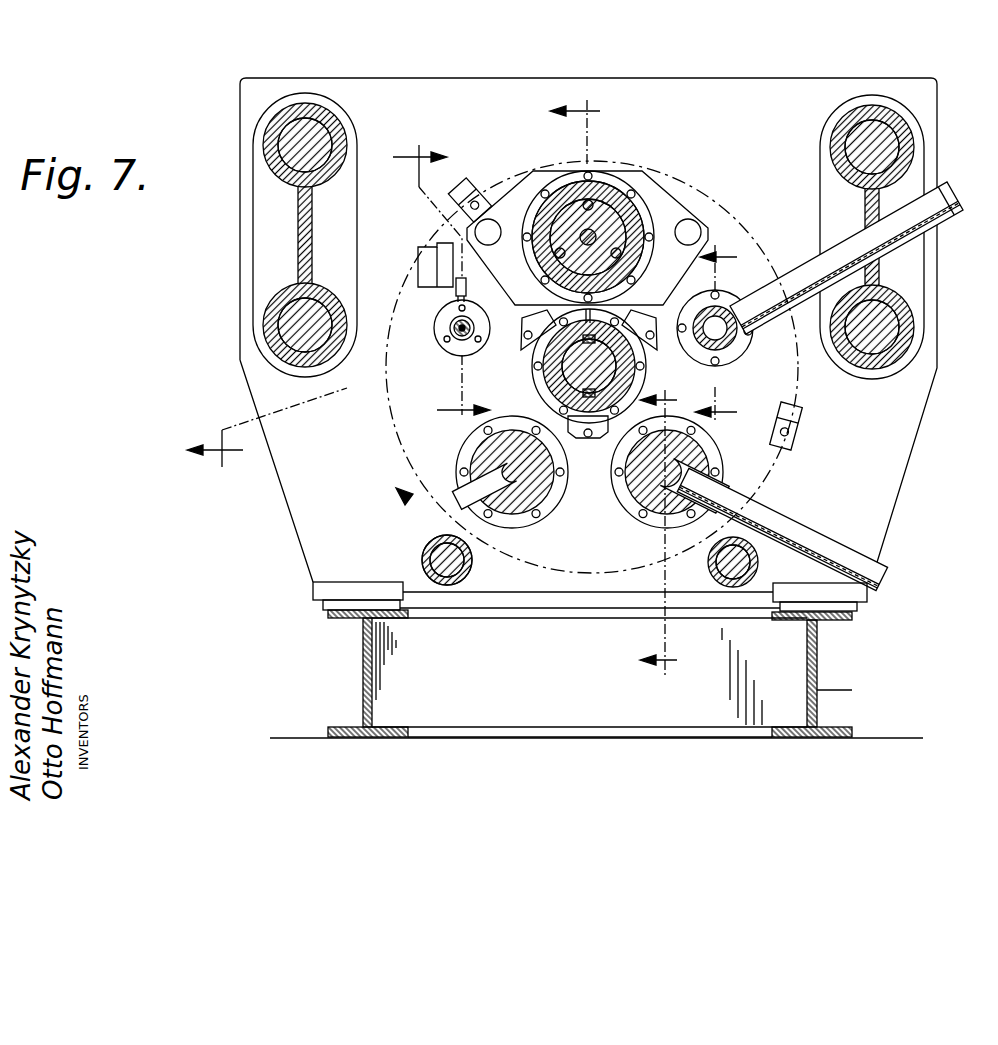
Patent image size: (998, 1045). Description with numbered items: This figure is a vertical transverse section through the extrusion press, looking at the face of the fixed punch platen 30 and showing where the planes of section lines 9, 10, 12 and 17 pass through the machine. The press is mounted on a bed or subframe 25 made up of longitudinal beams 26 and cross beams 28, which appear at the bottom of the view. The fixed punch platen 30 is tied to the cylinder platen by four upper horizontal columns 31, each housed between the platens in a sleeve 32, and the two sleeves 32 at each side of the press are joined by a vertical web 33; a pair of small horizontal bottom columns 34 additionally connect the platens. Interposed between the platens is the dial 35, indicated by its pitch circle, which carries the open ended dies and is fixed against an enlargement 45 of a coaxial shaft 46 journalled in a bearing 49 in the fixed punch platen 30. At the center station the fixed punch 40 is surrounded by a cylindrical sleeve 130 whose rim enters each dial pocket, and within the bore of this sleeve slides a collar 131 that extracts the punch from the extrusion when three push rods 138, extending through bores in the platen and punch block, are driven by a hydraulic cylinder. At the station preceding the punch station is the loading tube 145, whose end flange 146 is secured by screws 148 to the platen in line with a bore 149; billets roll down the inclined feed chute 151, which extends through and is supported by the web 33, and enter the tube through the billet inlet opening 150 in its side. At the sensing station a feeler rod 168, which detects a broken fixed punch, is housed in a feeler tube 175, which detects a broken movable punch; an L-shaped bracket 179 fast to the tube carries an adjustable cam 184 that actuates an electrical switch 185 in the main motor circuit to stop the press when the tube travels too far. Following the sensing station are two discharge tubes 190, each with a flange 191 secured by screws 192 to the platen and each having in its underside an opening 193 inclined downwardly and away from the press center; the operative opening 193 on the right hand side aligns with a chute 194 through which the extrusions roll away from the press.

The section line 9- 9 is at (721, 336).
The section line 10- 10 is at (437, 281).
The section line 12- 12 is at (401, 281).
The section line 17- 17 is at (664, 525).
The bed or subframe 25 is at (832, 690).
The longitudinal beams 26 is at (362, 652).
The cross beams 28 is at (580, 684).
The fixed punch platen 30 is at (905, 413).
The upper horizontal columns 31 is at (318, 130).
The sleeve 32 is at (305, 108).
The vertical web 33 is at (300, 212).
The horizontal bottom columns 34 is at (422, 556).
The dial 35 is at (793, 489).
The fixed punch 40 is at (566, 212).
The enlargement 45 is at (566, 372).
The coaxial shaft 46 is at (556, 396).
The bearing 49 is at (536, 352).
The cylindrical sleeve 130 is at (648, 203).
The collar 131 is at (650, 218).
The push rods 138 is at (570, 192).
The loading tube 145 is at (700, 352).
The end flange 146 is at (722, 342).
The screws 148 is at (720, 355).
The bore 149 is at (752, 345).
The billet inlet opening 150 is at (773, 298).
The feed chute 151 is at (950, 192).
The feeler rod 168 is at (445, 351).
The feeler tube 175 is at (452, 334).
The L-shaped bracket 179 is at (440, 322).
The adjustable cam 184 is at (457, 293).
The electrical switch 185 is at (440, 252).
The discharge tube 190 is at (505, 526).
The flange 191 is at (466, 441).
The screws 192 is at (566, 478).
The opening 193 is at (470, 486).
The chute 194 is at (798, 530).